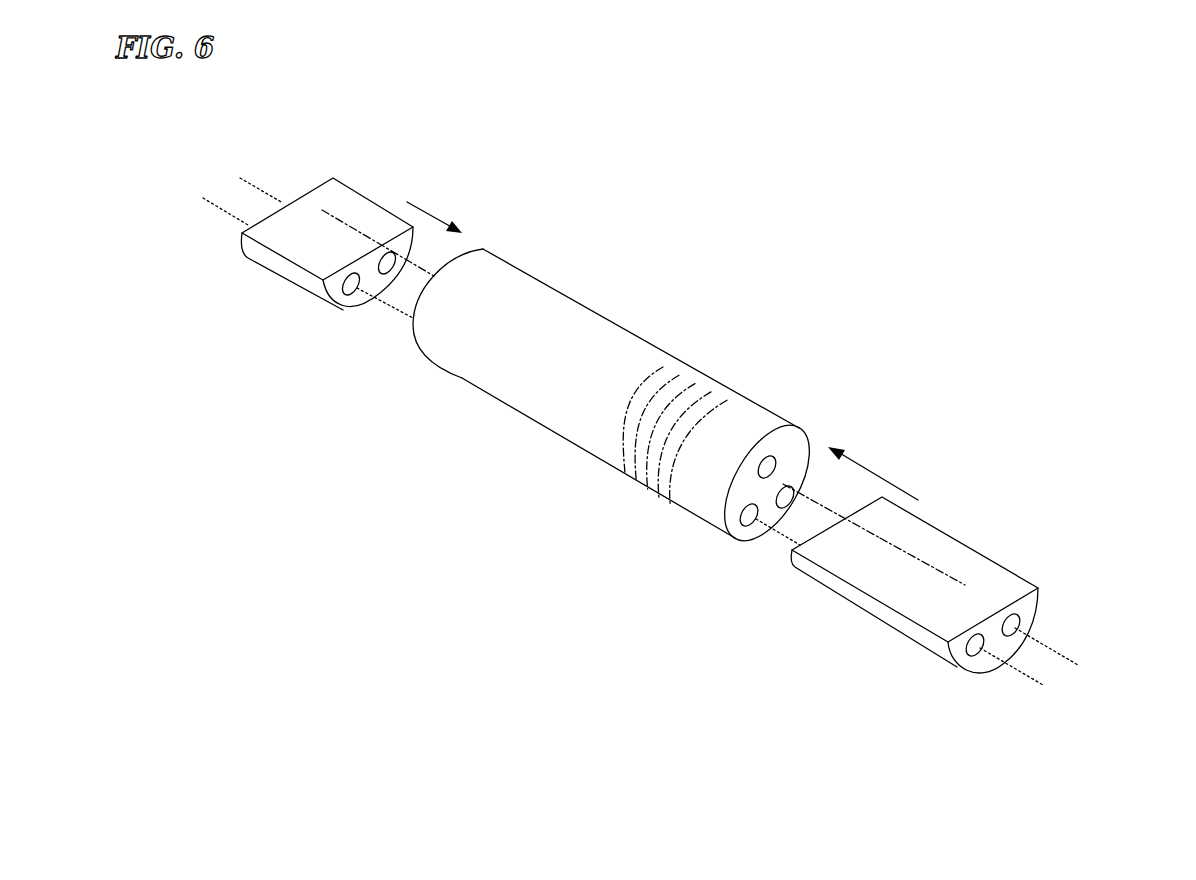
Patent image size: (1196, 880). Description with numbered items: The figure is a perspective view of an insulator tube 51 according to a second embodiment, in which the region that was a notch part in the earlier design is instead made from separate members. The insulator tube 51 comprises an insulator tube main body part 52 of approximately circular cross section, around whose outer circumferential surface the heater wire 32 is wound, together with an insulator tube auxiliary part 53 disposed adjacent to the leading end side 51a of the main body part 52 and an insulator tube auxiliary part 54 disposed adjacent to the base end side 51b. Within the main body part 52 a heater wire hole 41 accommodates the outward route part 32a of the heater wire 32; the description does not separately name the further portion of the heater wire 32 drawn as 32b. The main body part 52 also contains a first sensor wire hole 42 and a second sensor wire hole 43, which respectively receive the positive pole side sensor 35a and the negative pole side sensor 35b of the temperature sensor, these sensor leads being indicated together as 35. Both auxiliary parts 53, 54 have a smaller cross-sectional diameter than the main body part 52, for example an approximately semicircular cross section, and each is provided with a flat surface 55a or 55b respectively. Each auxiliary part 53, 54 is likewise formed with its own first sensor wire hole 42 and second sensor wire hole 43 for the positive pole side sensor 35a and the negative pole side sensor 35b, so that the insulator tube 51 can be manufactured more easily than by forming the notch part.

The insulator tube 51 is at (898, 272).
The insulator tube main body part 52 is at (563, 440).
The leading end side 51a is at (410, 350).
The base end side 51b is at (732, 515).
The insulator tube auxiliary part 53 is at (272, 265).
The insulator tube auxiliary part 54 is at (890, 620).
The flat surface 55a is at (317, 193).
The flat surface 55b is at (860, 570).
The heater wire hole 41 is at (770, 462).
The first sensor wire hole 42 is at (356, 298).
The second sensor wire hole 43 is at (388, 273).
The heater wire 32 is at (966, 566).
The outward route part 32a is at (343, 220).
The second optical fiber axis 32b is at (657, 377).
The optical fibers 35 is at (1066, 657).
The positive pole side sensor 35a is at (394, 312).
The negative pole side sensor 35b is at (258, 188).